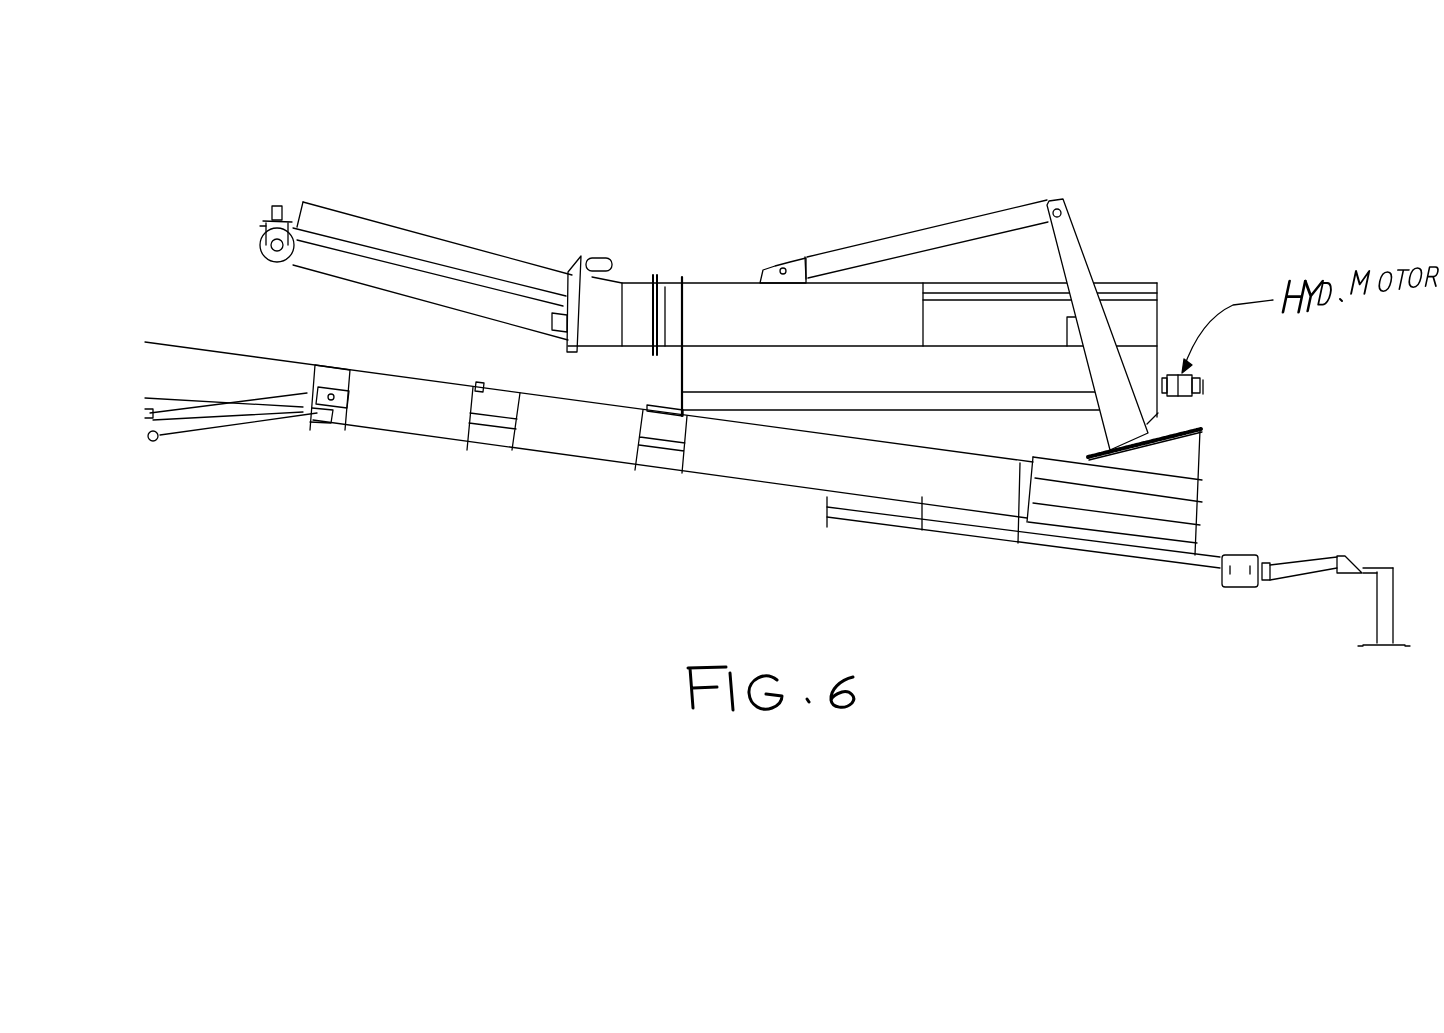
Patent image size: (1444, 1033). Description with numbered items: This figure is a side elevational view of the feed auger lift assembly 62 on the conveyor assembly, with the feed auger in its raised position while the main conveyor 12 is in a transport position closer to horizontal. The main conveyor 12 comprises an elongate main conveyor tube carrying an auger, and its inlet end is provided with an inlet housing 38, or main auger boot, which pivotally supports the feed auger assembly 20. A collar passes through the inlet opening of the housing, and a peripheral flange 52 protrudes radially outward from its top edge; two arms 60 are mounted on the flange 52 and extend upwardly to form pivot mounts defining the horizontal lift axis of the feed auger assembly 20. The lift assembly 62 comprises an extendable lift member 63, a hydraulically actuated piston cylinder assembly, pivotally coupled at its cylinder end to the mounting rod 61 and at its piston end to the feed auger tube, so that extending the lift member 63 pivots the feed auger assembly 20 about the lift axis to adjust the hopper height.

The main conveyor 12 is at (583, 443).
The feed auger assembly 20 is at (743, 307).
The inlet housing 38 is at (1183, 515).
The peripheral flange 52 is at (1170, 432).
The arms 60 is at (1070, 260).
The mounting rod 61 is at (1063, 207).
The feed auger lift assembly 62 is at (1069, 133).
The extendable lift member 63 is at (932, 232).